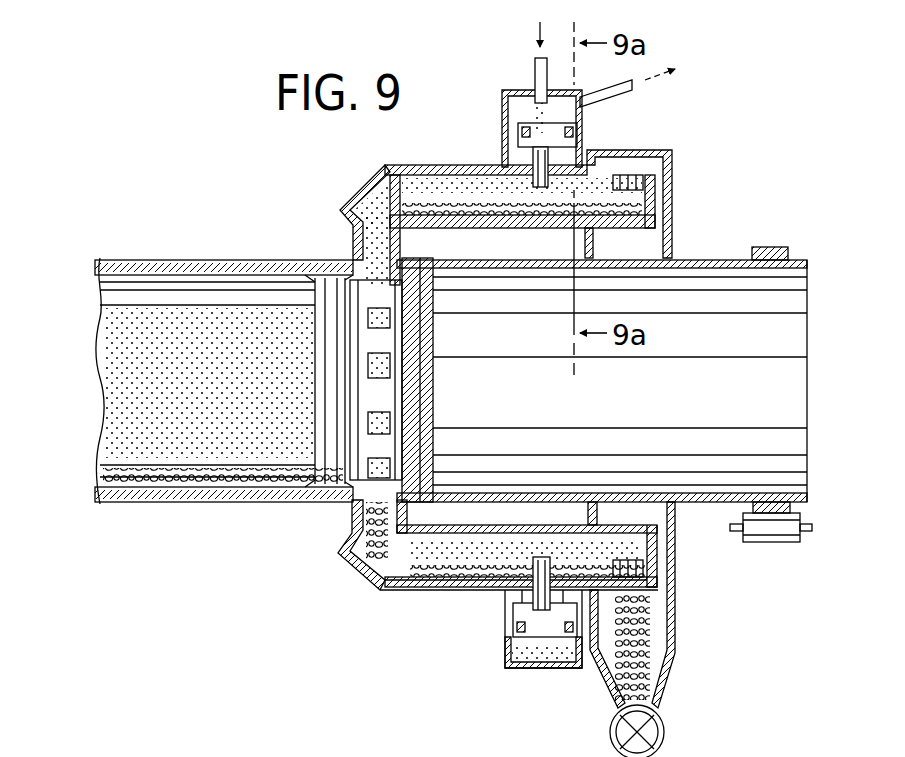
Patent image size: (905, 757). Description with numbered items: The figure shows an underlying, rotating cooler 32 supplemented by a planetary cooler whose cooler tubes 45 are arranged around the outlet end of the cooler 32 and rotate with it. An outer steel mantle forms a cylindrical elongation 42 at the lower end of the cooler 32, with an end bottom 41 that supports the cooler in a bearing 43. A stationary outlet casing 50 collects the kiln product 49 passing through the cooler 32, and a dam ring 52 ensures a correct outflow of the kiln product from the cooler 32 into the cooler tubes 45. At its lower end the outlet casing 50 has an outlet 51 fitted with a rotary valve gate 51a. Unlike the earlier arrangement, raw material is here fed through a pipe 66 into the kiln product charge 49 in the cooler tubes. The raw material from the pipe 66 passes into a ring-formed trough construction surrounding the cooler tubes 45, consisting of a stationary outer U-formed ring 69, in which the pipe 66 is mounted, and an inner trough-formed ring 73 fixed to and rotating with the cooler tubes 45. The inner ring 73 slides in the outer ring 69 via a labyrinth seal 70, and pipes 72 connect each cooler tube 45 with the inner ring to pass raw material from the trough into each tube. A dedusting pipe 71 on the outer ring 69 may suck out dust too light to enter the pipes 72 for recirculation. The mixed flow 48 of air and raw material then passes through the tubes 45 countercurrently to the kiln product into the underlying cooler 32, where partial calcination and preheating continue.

The underlying cooler 32 is at (178, 258).
The end bottom 41 is at (437, 400).
The cylindrical elongation 42 is at (807, 406).
The bearing 43 is at (758, 247).
The cooler tubes 45 is at (434, 167).
The flow of air 48 is at (122, 420).
The kiln product 49 is at (150, 470).
The outlet casing 50 is at (672, 196).
The outlet 51 is at (673, 683).
The rotary valve gate 51a is at (662, 737).
The dam ring 52 is at (307, 285).
The pipe 66 is at (535, 70).
The outer U-formed ring 69 is at (502, 110).
The labyrinth seal 70 is at (577, 132).
The dedusting pipe 71 is at (632, 89).
The pipes 72 is at (544, 197).
The inner trough-formed ring 73 is at (520, 147).